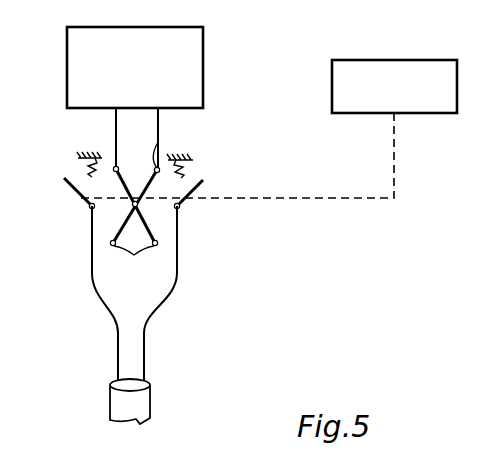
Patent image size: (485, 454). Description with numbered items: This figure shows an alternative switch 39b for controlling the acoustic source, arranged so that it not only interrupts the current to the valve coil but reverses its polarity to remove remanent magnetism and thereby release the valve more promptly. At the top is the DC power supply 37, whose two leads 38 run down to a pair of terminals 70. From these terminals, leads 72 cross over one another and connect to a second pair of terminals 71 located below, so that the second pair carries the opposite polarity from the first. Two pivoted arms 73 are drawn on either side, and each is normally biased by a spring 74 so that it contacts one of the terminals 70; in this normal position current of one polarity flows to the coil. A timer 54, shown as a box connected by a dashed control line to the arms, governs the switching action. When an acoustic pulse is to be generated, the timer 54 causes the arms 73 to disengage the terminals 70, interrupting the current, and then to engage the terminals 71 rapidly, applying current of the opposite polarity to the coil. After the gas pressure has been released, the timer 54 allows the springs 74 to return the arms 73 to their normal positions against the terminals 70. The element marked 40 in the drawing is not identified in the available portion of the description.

The DC power supply 37 is at (203, 67).
The timer 54 is at (397, 58).
The leads 38 is at (157, 130).
The terminals 70 is at (116, 167).
The leads 72 is at (129, 212).
The terminals 71 is at (134, 255).
The springs 74 is at (86, 172).
The arms 73 is at (84, 197).
The tube 40 is at (148, 328).
The switch 39b is at (249, 276).